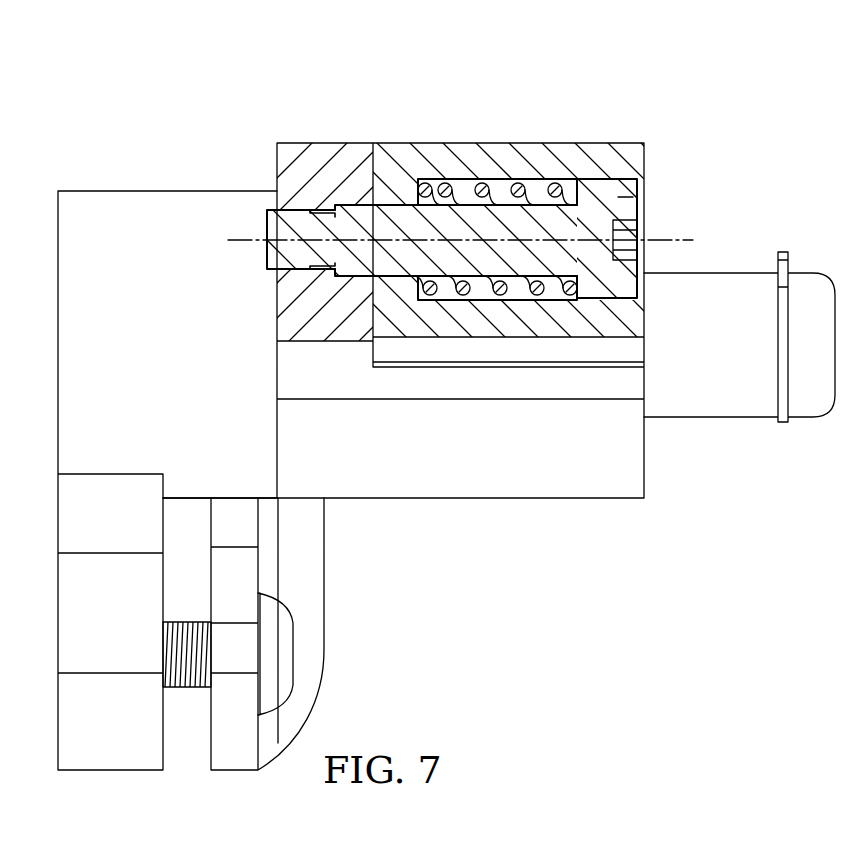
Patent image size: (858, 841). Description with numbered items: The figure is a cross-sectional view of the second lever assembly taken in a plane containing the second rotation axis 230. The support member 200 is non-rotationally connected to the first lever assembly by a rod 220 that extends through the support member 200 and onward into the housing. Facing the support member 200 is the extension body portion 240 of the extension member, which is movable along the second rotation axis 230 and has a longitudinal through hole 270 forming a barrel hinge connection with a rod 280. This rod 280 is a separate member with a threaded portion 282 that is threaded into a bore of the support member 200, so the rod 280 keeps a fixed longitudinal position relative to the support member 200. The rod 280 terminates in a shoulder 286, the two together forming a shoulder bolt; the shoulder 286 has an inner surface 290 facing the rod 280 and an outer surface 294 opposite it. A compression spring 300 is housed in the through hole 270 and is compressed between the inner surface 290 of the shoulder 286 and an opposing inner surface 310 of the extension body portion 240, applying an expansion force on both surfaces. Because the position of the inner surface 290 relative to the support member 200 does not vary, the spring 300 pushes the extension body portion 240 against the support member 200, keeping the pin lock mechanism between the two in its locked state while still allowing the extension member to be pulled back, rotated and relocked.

The support member 200 is at (318, 160).
The rod 220 is at (722, 393).
The second rotation axis 230 is at (242, 243).
The extension body portion 240 is at (440, 160).
The longitudinal through hole 270 is at (537, 190).
The rod 280 is at (404, 215).
The threaded portion 282 is at (276, 226).
The shoulder 286 is at (633, 197).
The inner surface 290 is at (567, 187).
The outer surface 294 is at (643, 209).
The spring 300 is at (484, 192).
The inner surface 310 is at (427, 300).